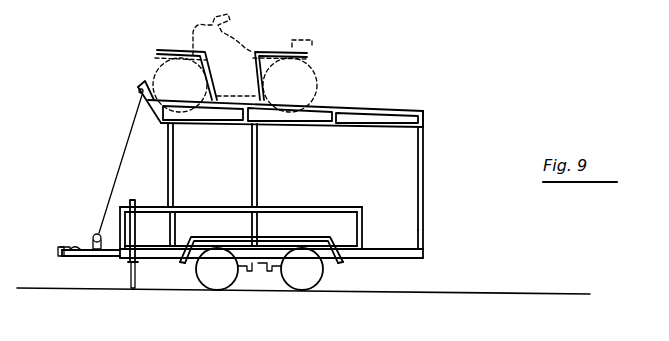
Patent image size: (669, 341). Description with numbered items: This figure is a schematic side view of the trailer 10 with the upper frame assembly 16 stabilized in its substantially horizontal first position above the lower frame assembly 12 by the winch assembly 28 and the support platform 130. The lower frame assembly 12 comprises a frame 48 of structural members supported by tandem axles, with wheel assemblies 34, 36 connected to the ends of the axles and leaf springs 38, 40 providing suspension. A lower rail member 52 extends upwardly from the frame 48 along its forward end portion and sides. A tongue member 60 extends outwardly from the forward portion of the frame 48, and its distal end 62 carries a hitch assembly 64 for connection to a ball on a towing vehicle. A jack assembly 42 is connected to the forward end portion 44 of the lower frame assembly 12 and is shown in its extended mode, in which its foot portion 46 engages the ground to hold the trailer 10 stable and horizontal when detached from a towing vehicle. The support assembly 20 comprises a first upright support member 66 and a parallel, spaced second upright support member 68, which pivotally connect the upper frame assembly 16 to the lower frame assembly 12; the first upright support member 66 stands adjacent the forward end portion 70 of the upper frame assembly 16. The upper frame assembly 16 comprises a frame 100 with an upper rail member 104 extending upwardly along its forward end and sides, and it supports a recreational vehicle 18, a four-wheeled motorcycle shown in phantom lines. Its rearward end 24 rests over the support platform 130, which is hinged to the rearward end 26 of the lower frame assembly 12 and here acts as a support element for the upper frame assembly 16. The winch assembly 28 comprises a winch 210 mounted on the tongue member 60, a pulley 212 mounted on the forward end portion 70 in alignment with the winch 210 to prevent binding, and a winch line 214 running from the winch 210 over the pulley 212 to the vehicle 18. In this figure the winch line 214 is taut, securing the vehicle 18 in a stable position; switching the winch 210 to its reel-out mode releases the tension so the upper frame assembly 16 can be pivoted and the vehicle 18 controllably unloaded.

The trailer 10 is at (432, 51).
The lower frame assembly 12 is at (440, 231).
The upper frame assembly 16 is at (417, 99).
The recreational vehicle 18 is at (250, 41).
The support assembly 20 is at (240, 165).
The rearward end of the upper frame assembly 24 is at (410, 128).
The rearward end of the lower frame assembly 26 is at (412, 247).
The winch assembly 28 is at (128, 87).
The wheel assembly 34 is at (205, 278).
The wheel assembly 36 is at (313, 280).
The leaf spring 38 is at (247, 270).
The leaf spring 40 is at (275, 273).
The jack assembly 42 is at (126, 264).
The forward end portion of the lower frame assembly 44 is at (120, 256).
The foot portion 46 is at (130, 265).
The frame 48 is at (398, 255).
The lower rail member 52 is at (293, 207).
The tongue member 60 is at (78, 248).
The distal end of the tongue member 62 is at (70, 250).
The hitch assembly 64 is at (58, 250).
The first upright support member 66 is at (167, 190).
The second upright support member 68 is at (259, 171).
The forward end portion of the upper frame assembly 70 is at (161, 122).
The frame 100 is at (355, 129).
The upper rail member 104 is at (145, 107).
The support platform 130 is at (429, 192).
The winch 210 is at (93, 235).
The pulley 212 is at (137, 80).
The winch line 214 is at (125, 147).